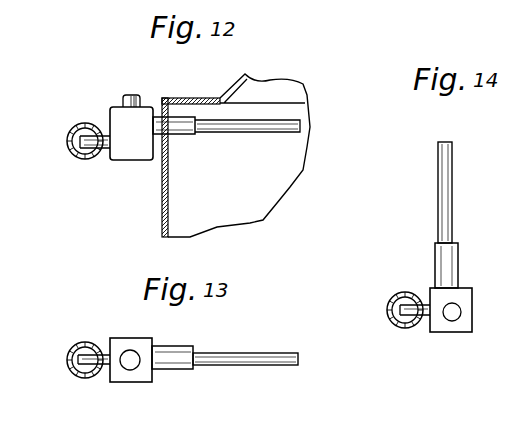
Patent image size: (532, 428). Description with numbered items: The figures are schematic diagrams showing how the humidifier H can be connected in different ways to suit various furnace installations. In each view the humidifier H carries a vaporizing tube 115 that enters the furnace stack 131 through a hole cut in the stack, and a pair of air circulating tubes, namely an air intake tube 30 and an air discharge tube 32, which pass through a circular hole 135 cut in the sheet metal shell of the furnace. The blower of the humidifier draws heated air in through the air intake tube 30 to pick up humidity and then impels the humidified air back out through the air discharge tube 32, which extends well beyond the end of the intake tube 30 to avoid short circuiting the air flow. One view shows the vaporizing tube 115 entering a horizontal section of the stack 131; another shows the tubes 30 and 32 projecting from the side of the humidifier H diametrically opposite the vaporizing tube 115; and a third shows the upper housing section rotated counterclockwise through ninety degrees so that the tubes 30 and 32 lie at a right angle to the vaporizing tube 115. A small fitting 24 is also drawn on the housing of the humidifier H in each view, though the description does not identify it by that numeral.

In FIG. 12, the stack 131 is at (68, 141).
In FIG. 13, the stack 131 is at (68, 365).
In FIG. 14, the stack 131 is at (397, 292).
In FIG. 12, the vaporizing tube 115 is at (80, 152).
In FIG. 13, the vaporizing tube 115 is at (87, 362).
In FIG. 14, the vaporizing tube 115 is at (410, 316).
In FIG. 12, the humidifier H is at (128, 160).
In FIG. 12, the button 24 is at (129, 95).
In FIG. 13, the button 24 is at (128, 364).
In FIG. 14, the button 24 is at (455, 311).
In FIG. 12, the air intake tube 30 is at (199, 134).
In FIG. 13, the air intake tube 30 is at (177, 371).
In FIG. 14, the air intake tube 30 is at (459, 252).
In FIG. 12, the air discharge tube 32 is at (298, 133).
In FIG. 13, the air discharge tube 32 is at (258, 367).
In FIG. 14, the air discharge tube 32 is at (451, 185).
In FIG. 12, the circular hole 135 is at (169, 143).